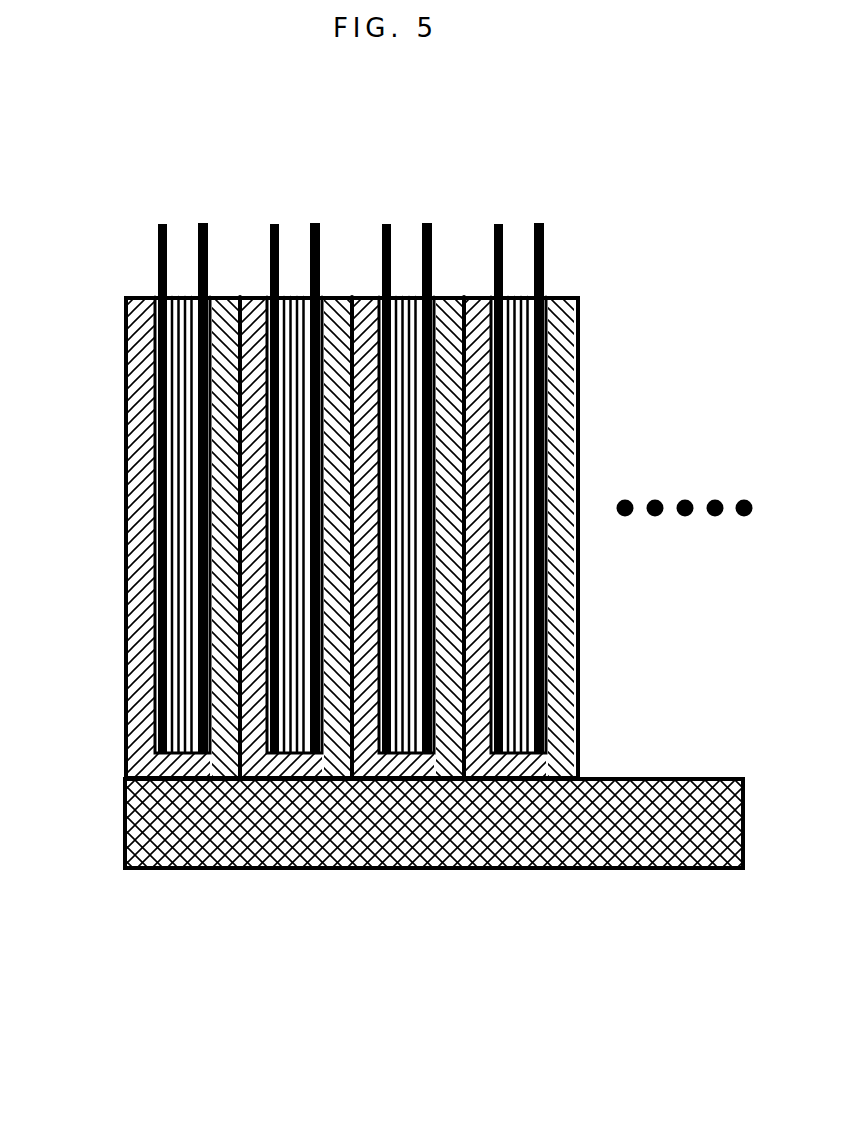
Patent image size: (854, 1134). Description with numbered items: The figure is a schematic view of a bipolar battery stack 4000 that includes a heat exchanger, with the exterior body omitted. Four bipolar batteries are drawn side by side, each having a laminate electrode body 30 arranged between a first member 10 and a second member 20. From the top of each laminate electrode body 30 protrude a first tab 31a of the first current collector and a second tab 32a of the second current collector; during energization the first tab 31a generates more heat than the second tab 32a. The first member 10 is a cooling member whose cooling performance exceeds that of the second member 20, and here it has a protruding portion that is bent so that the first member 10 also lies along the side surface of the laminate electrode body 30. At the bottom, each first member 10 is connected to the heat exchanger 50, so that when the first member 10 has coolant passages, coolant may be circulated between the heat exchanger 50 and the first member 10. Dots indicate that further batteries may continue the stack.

The bipolar battery stack 4000 is at (435, 119).
The first member 10 is at (124, 778).
The second member 20 is at (227, 296).
The laminate electrode body 30 is at (179, 295).
The first tab 31a is at (160, 222).
The second tab 32a is at (204, 222).
The heat exchanger 50 is at (574, 848).